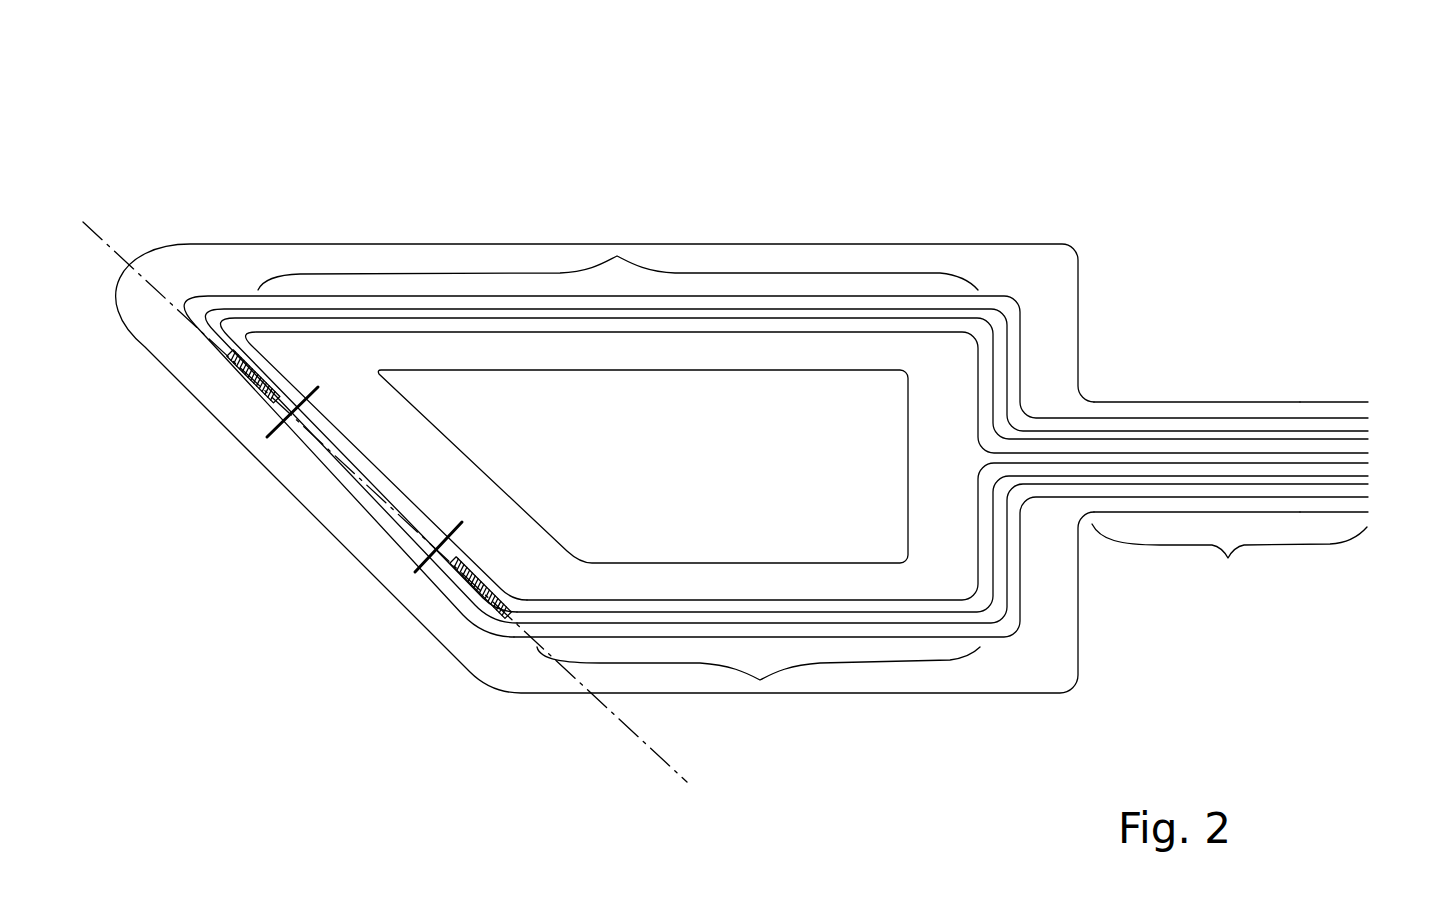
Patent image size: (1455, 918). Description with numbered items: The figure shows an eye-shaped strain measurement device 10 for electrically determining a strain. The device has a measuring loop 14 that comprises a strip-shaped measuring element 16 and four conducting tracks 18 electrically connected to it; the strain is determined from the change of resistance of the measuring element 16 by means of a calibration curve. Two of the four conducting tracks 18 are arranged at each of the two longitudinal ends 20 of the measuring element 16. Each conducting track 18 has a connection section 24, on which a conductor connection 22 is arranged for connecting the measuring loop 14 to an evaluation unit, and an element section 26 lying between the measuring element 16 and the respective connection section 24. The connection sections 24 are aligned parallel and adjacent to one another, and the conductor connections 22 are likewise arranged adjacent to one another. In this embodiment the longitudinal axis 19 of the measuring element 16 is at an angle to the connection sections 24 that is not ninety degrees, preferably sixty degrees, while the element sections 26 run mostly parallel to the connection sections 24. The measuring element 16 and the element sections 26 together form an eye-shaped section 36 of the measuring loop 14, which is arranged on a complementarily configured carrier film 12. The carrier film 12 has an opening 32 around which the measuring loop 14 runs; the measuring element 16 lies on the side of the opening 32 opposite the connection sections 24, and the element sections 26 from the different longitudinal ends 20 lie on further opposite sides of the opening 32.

The strain measurement device 10 is at (431, 186).
The carrier film 12 is at (163, 262).
The measuring loop 14 is at (1032, 287).
The measuring element 16 is at (353, 483).
The conducting tracks 18 is at (1218, 390).
The longitudinal axis 19 is at (183, 300).
The longitudinal ends 20 is at (275, 410).
The conductor connections 22 is at (1386, 427).
The connection sections 24 is at (1228, 558).
The element sections 26 is at (617, 256).
The opening 32 is at (843, 525).
The eye-shaped section 36 is at (1028, 645).